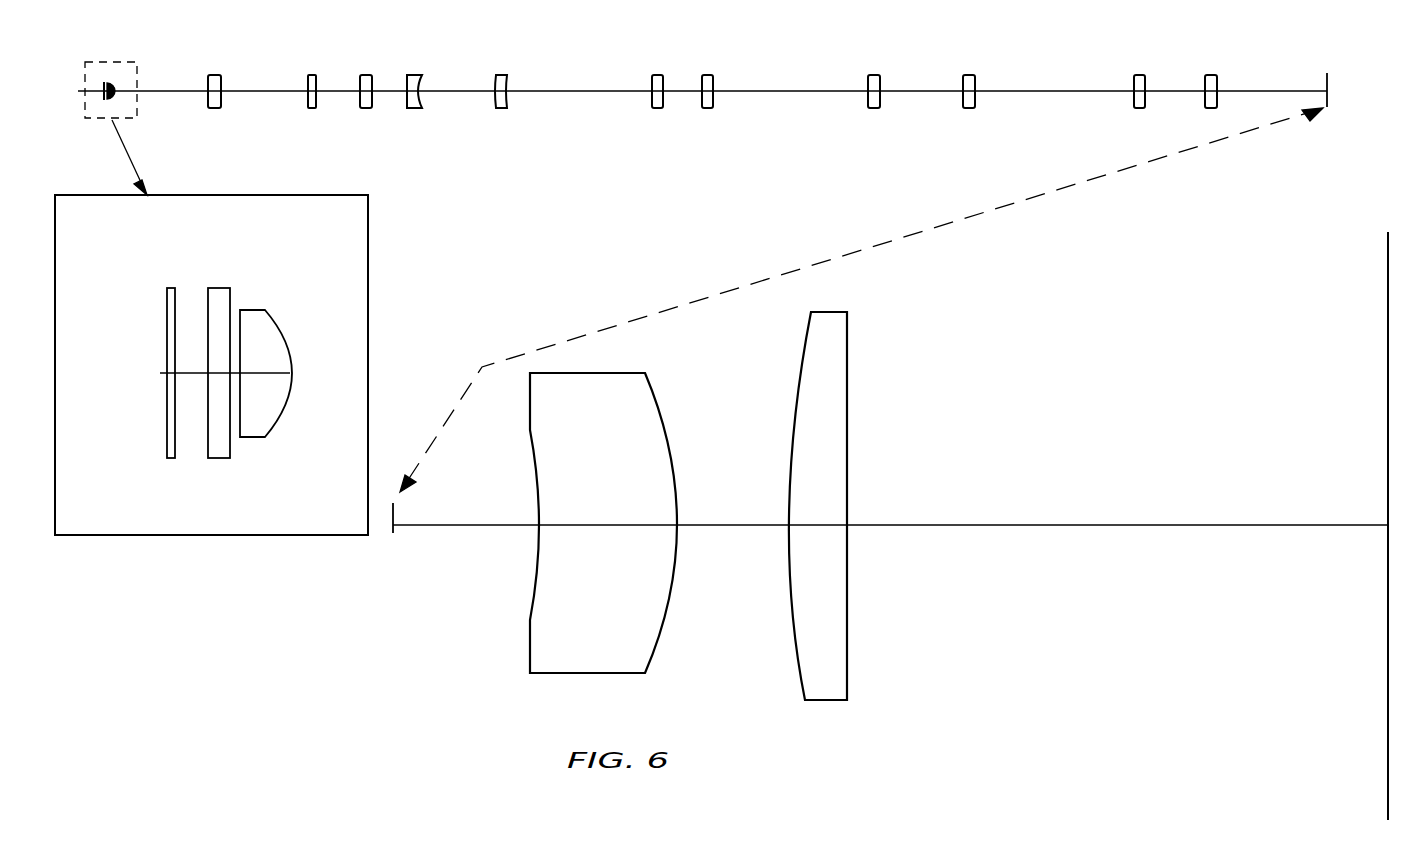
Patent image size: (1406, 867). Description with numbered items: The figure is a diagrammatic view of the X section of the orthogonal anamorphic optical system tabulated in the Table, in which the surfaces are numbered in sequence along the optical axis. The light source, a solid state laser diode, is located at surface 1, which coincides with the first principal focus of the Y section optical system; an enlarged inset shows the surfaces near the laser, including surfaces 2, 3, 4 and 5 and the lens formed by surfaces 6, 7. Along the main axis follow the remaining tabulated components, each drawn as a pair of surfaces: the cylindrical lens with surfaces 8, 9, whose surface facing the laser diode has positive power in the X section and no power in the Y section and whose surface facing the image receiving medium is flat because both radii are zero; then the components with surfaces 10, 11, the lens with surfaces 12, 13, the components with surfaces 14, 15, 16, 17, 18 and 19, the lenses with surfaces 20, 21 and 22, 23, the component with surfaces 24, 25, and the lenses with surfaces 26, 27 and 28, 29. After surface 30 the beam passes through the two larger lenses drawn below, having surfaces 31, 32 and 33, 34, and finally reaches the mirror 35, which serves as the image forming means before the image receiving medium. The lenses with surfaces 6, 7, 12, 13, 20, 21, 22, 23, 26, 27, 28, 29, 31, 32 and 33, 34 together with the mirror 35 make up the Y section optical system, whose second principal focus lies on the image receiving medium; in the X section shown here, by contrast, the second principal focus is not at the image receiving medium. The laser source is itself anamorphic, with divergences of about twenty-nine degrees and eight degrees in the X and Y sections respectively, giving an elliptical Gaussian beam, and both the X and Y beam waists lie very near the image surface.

The surface 1 is at (142, 330).
The surface 2 is at (154, 395).
The surface 3 is at (175, 448).
The surface 4 is at (223, 380).
The surface 5 is at (230, 448).
The lens surface 6 is at (281, 363).
The lens surface 7 is at (292, 342).
The cylindrical lens surface 8 is at (206, 87).
The cylindrical lens surface 9 is at (221, 100).
The surface 10 is at (306, 89).
The surface 11 is at (316, 100).
The lens surface 12 is at (363, 88).
The lens surface 13 is at (372, 100).
The surface 14 is at (419, 91).
The surface 15 is at (422, 100).
The surface 16 is at (502, 91).
The surface 17 is at (507, 100).
The surface 18 is at (649, 91).
The surface 19 is at (663, 100).
The lens surface 20 is at (710, 91).
The lens surface 21 is at (713, 100).
The lens surface 22 is at (867, 91).
The lens surface 23 is at (880, 100).
The surface 24 is at (967, 91).
The surface 25 is at (975, 100).
The lens surface 26 is at (1140, 91).
The lens surface 27 is at (1145, 100).
The lens surface 28 is at (1215, 80).
The lens surface 29 is at (1217, 100).
The surface 30 is at (1325, 77).
The lens surface 31 is at (590, 523).
The lens surface 32 is at (672, 575).
The lens surface 33 is at (819, 506).
The lens surface 34 is at (848, 580).
The mirror 35 is at (1386, 588).